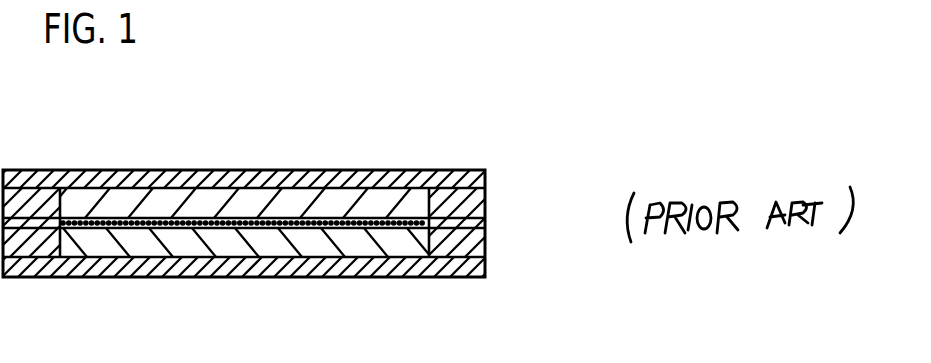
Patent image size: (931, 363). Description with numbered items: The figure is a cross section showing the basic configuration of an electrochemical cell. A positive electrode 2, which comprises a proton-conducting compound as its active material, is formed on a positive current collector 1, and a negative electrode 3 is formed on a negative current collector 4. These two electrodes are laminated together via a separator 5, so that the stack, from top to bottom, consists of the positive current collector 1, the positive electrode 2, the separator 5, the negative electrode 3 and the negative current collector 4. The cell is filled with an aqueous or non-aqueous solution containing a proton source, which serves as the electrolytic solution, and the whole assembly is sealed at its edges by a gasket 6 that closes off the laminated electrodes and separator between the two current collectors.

The positive current collector 1 is at (79, 170).
The positive electrode 2 is at (205, 207).
The negative electrode 3 is at (325, 248).
The negative current collector 4 is at (111, 278).
The separator 5 is at (368, 222).
The gasket 6 is at (470, 208).